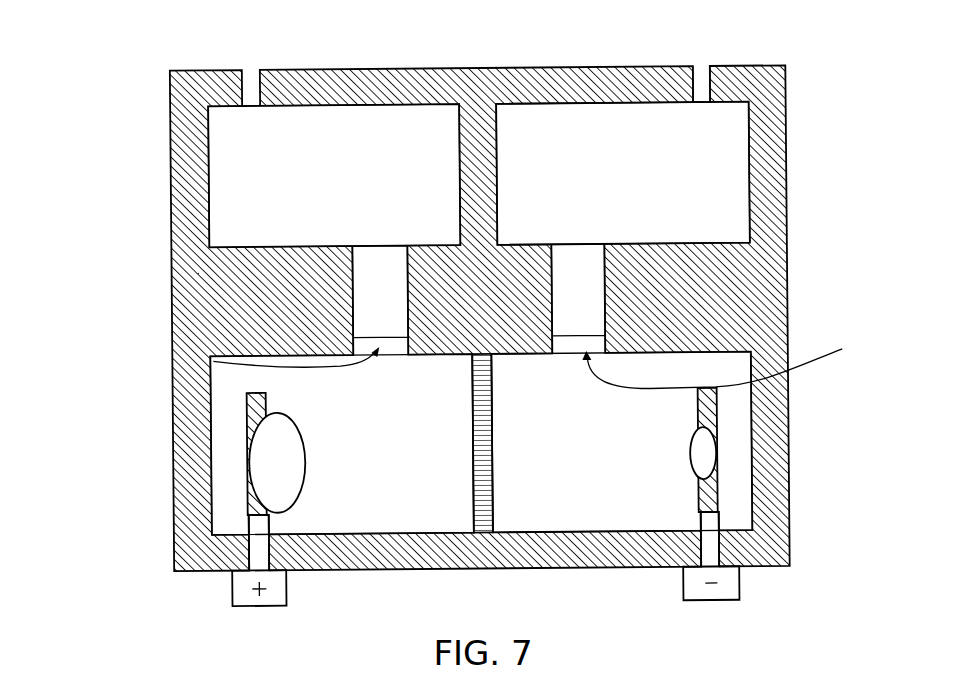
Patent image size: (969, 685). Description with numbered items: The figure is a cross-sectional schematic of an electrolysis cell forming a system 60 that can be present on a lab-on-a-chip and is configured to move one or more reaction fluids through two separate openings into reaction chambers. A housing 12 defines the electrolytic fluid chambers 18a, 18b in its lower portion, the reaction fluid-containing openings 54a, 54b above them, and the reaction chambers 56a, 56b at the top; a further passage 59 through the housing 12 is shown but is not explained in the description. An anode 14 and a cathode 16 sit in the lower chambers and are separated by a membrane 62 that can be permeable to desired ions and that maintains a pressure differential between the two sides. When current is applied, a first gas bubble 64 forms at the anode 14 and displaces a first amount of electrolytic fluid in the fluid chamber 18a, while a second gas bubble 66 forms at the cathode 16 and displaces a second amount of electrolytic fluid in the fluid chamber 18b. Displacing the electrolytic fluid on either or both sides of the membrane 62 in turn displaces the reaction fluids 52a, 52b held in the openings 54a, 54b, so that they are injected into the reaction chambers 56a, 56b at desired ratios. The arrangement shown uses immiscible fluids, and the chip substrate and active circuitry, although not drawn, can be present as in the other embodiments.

The housing 12 is at (184, 168).
The anode 14 is at (718, 485).
The cathode 16 is at (265, 483).
The fluid chamber 18a is at (338, 416).
The fluid chamber 18b is at (628, 430).
The reaction fluid 52a is at (391, 302).
The reaction fluid 52b is at (589, 309).
The reaction fluid-containing opening 54a is at (213, 359).
The reaction fluid-containing opening 54b is at (735, 361).
The reaction chamber 56a is at (256, 193).
The reaction chamber 56b is at (682, 154).
The port 59 is at (692, 79).
The system 60 is at (154, 105).
The membrane 62 is at (558, 462).
The first gas bubble 64 is at (708, 455).
The second gas bubble 66 is at (266, 485).